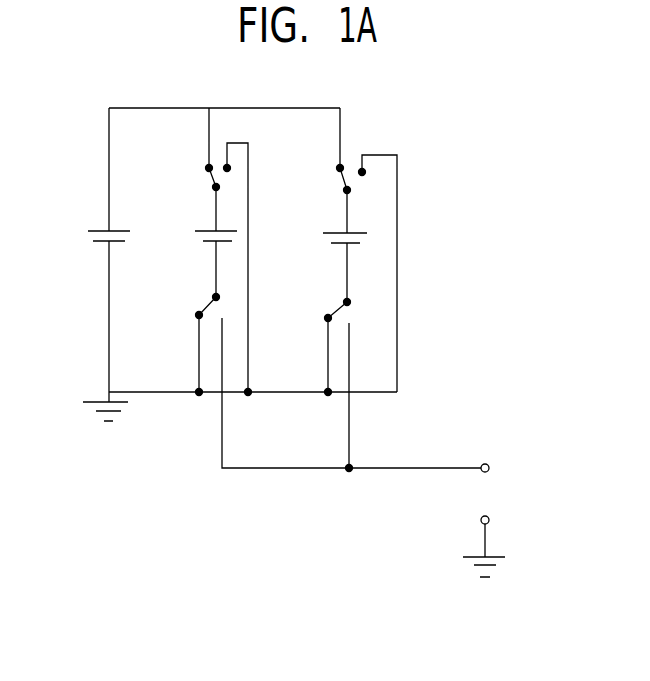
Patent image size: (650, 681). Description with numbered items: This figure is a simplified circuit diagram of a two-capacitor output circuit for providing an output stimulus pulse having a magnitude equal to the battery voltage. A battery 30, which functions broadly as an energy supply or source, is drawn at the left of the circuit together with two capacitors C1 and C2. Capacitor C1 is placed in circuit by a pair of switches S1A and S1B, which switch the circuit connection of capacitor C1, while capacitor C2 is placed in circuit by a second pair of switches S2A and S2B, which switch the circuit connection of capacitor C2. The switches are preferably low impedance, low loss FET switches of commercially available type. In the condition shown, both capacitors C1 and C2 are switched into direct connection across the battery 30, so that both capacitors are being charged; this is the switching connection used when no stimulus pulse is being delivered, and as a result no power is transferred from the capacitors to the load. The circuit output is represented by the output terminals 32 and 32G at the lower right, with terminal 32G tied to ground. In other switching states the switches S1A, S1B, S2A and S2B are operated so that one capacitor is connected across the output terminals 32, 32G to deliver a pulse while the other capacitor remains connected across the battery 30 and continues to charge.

The battery 30 is at (88, 234).
The switch S1A is at (199, 252).
The switch S1B is at (311, 381).
The switch S2A is at (374, 250).
The switch S2B is at (312, 385).
The capacitor C1 is at (207, 242).
The capacitor C2 is at (333, 246).
The output terminal 32 is at (486, 463).
The output terminal 32G is at (481, 520).